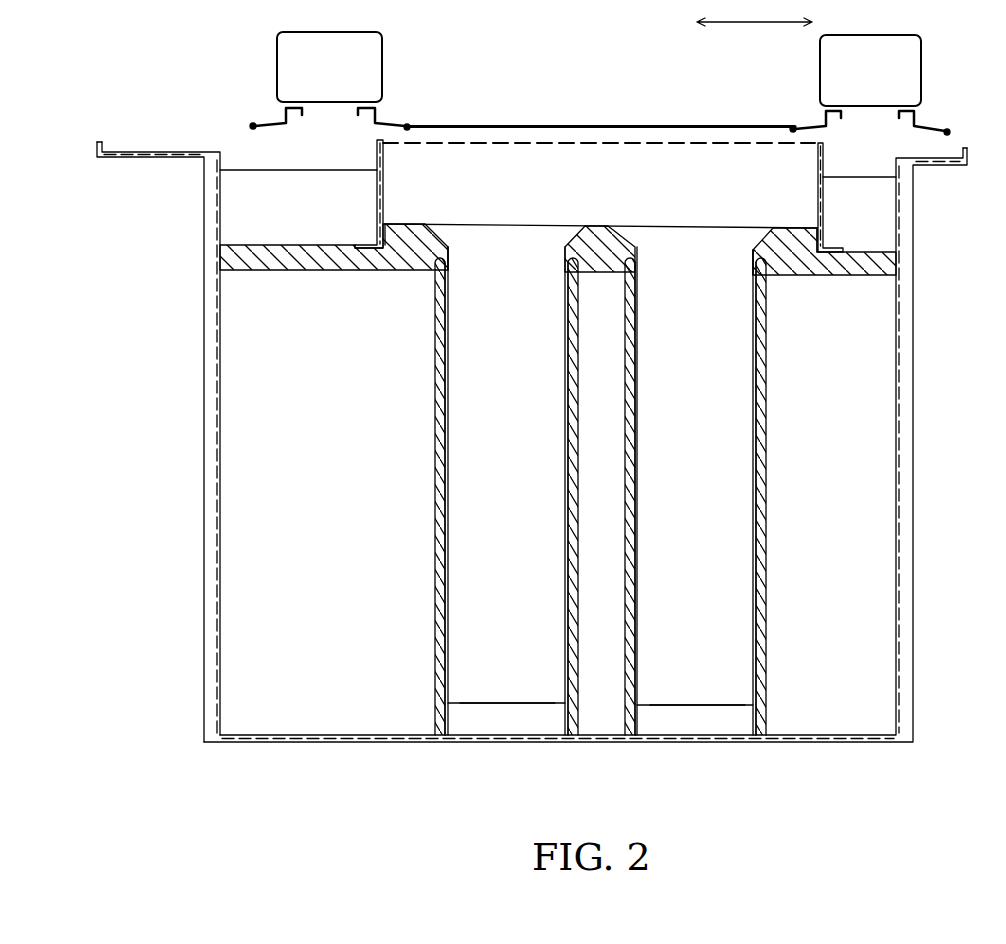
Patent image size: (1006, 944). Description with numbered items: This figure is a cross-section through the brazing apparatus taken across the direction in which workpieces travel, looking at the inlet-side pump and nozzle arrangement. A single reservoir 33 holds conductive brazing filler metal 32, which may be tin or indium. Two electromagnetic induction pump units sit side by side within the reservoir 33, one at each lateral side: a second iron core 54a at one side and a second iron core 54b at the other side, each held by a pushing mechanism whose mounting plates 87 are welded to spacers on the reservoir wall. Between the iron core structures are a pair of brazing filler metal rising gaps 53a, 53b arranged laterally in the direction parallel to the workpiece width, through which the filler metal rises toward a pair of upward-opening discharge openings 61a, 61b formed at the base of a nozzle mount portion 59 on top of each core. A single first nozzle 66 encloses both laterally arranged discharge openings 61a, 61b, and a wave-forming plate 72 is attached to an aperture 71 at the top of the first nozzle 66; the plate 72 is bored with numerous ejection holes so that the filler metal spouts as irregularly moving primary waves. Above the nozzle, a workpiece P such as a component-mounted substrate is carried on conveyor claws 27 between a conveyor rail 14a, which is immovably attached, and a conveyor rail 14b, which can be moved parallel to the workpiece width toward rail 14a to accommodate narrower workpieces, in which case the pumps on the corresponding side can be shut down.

The conveyor rail 14a is at (352, 45).
The conveyor rail 14b is at (905, 70).
The conveyor claws 27 is at (380, 122).
The conductive brazing filler metal 32 is at (233, 168).
The reservoir 33 is at (902, 300).
The first nozzle 66 is at (826, 165).
The aperture 71 is at (575, 160).
The wave-forming plate 72 is at (618, 143).
The workpiece P is at (681, 126).
The discharge opening 61a is at (494, 240).
The discharge opening 61b is at (695, 240).
The nozzle mount portion 59 is at (303, 267).
The brazing filler metal rising gap 53a is at (462, 357).
The brazing filler metal rising gap 53b is at (720, 366).
The mounting plates 87 is at (435, 470).
The second iron core 54a is at (503, 703).
The second iron core 54b is at (693, 705).